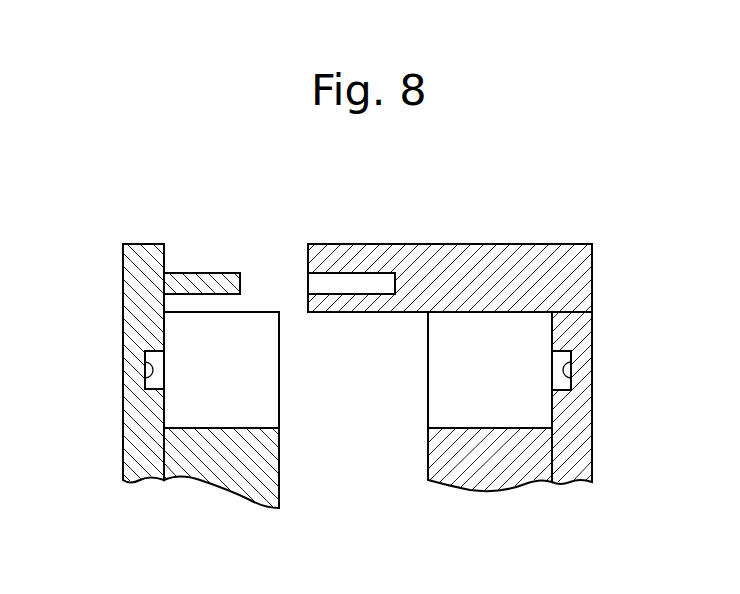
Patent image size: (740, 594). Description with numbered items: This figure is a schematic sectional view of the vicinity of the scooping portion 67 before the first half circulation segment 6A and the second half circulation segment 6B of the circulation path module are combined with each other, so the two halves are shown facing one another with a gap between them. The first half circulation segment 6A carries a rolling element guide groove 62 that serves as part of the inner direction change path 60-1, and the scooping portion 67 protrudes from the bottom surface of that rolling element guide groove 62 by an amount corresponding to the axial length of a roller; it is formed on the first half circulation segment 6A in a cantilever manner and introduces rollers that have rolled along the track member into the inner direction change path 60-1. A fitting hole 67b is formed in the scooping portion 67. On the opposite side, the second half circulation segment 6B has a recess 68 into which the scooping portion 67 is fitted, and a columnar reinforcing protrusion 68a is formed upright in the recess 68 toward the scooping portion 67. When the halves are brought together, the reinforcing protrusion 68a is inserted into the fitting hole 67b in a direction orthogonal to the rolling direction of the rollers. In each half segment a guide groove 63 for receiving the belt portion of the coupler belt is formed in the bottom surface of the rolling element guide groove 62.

The first half circulation segment 6A is at (491, 331).
The second half circulation segment 6B is at (162, 342).
The inner direction change path 60-1 is at (486, 336).
The rolling element guide groove 62 is at (167, 410).
The guide groove 63 is at (149, 370).
The scooping portion 67 is at (337, 244).
The fitting hole 67b is at (368, 282).
The recess 68 is at (165, 257).
The reinforcing protrusion 68a is at (222, 271).